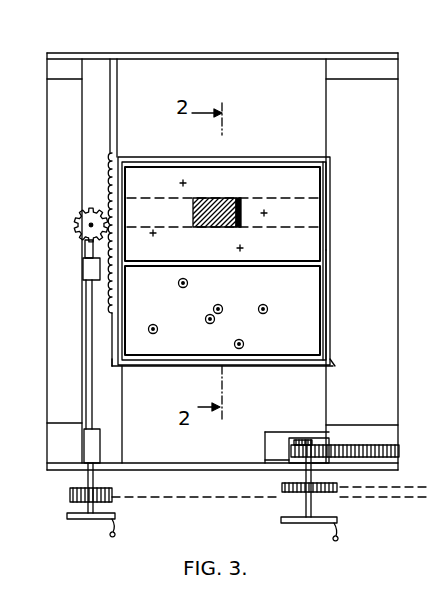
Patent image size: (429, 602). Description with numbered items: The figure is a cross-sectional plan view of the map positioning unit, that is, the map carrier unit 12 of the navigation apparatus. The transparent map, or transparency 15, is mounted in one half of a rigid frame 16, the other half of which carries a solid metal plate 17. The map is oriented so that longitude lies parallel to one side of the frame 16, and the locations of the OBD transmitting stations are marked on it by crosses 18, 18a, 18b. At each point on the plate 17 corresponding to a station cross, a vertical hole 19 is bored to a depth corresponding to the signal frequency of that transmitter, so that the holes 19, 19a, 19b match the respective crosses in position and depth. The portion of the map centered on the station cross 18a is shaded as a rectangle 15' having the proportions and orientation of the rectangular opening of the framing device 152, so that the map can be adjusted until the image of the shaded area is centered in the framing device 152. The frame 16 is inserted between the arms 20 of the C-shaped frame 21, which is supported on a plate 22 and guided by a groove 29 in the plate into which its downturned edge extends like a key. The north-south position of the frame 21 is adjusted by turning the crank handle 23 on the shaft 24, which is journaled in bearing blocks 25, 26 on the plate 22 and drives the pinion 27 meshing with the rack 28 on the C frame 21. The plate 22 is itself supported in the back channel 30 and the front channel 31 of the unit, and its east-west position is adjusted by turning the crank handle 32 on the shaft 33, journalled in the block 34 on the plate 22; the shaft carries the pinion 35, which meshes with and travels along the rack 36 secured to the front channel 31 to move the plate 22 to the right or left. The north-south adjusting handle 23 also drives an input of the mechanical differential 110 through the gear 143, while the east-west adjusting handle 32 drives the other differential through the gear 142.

The map carrier unit 12 is at (150, 38).
The mechanical differential 110 is at (398, 430).
The back channel 30 is at (369, 78).
The front channel 31 is at (384, 416).
The rack 28 is at (104, 185).
The pinion 27 is at (86, 224).
The bearing block 25 is at (88, 270).
The shaft 24 is at (85, 388).
The bearing block 26 is at (85, 440).
The gear 143 is at (112, 490).
The crank handle 23 is at (118, 527).
The groove 29 is at (122, 433).
The arms 20 is at (185, 157).
The C-shaped frame 21 is at (118, 364).
The plate 22 is at (325, 393).
The rigid frame 16 is at (327, 188).
The transparency 15 is at (222, 196).
The framing device 152 is at (318, 200).
The cross 18 is at (180, 184).
The station cross 18a is at (213, 222).
The station cross 18b is at (212, 228).
The shaded rectangle 15' is at (261, 229).
The solid metal plate 17 is at (312, 301).
The vertical hole 19 is at (179, 285).
The hole 19a is at (220, 305).
The hole 19b is at (209, 324).
The block 34 is at (283, 435).
The pinion 35 is at (288, 444).
The rack 36 is at (378, 442).
The shaft 33 is at (304, 478).
The gear 142 is at (285, 490).
The crank handle 32 is at (340, 528).